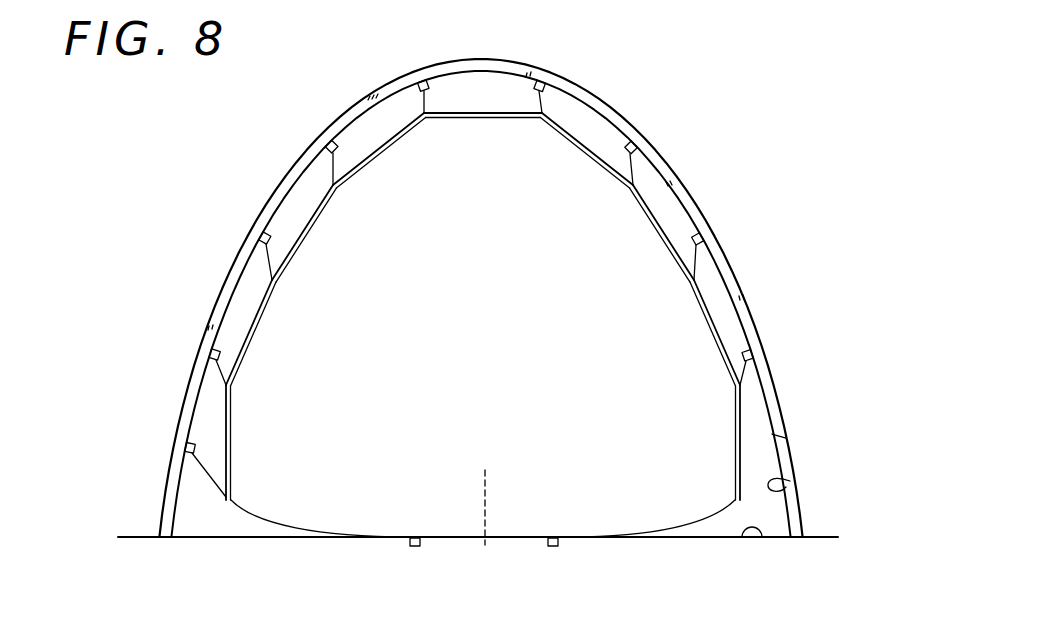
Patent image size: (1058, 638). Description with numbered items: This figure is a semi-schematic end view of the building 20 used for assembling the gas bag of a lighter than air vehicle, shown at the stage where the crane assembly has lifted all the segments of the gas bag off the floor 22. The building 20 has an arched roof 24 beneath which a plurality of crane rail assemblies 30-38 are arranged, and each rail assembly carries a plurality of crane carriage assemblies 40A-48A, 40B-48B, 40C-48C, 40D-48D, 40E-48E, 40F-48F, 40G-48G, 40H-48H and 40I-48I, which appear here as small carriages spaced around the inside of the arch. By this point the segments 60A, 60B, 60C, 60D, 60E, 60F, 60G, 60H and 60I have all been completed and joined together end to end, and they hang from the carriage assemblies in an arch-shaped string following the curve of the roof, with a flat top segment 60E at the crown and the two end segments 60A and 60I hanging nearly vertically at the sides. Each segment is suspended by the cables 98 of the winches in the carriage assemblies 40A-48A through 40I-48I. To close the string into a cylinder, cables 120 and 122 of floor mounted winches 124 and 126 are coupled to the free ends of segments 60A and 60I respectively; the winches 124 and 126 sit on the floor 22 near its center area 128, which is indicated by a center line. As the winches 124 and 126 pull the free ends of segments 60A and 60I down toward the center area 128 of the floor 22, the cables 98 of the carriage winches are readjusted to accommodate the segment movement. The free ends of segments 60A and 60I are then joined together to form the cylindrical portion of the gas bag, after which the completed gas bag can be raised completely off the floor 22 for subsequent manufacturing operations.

The building 20 is at (480, 297).
The floor 22 is at (745, 548).
The arched roof 24 is at (300, 152).
The crane rail assemblies 30-38 is at (790, 481).
The crane carriage assemblies 40A-48A is at (188, 447).
The crane carriage assemblies 40B-48B is at (213, 353).
The crane carriage assemblies 40C-48C is at (263, 233).
The crane carriage assemblies 40D-48D is at (330, 141).
The crane carriage assemblies 40E-48E is at (428, 86).
The crane carriage assemblies 40F-48F is at (546, 90).
The crane carriage assemblies 40G-48G is at (638, 144).
The crane carriage assemblies 40H-48H is at (703, 235).
The crane carriage assemblies 40I-48I is at (753, 350).
The segment 60A is at (232, 443).
The segment 60B is at (248, 340).
The segment 60C is at (305, 232).
The segment 60D is at (377, 150).
The segment 60E is at (490, 118).
The segment 60F is at (588, 150).
The segment 60G is at (664, 235).
The segment 60H is at (718, 337).
The segment 60I is at (735, 448).
The cables 98 is at (418, 103).
The cable 120 is at (268, 518).
The cable 122 is at (690, 522).
The floor mounted winch 124 is at (413, 548).
The floor mounted winch 126 is at (551, 548).
The center area 128 is at (480, 492).